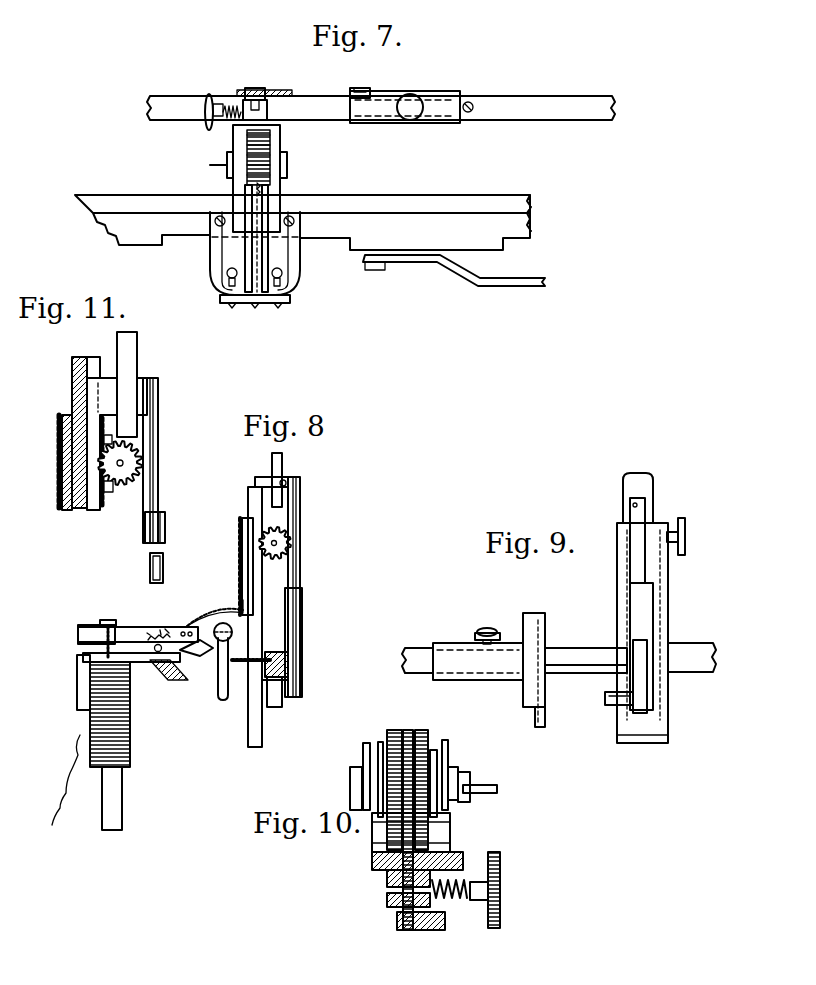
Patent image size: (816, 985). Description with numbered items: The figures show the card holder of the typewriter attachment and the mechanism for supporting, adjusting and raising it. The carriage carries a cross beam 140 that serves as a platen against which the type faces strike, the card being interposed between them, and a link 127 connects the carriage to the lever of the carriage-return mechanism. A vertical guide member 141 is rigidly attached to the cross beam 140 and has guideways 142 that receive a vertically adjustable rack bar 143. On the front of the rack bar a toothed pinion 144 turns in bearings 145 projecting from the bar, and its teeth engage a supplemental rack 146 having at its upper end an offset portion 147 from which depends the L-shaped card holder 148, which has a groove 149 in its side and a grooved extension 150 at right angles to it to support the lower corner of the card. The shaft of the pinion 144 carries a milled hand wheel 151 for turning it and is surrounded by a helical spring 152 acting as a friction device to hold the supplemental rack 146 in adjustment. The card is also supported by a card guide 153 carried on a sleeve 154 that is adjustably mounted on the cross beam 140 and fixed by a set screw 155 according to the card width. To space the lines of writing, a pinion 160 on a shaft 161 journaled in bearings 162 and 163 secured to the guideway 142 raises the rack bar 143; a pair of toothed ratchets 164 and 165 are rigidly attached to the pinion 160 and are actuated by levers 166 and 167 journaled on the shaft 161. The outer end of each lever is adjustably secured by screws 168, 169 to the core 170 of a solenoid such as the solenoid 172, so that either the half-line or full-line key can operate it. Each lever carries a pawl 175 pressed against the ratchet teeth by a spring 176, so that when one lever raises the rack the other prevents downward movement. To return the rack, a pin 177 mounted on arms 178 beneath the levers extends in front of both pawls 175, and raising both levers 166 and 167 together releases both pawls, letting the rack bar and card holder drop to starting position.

In FIG. 7, the link 127 is at (508, 286).
In FIG. 7, the cross beam 140 is at (548, 96).
In FIG. 8, the cross beam 140 is at (283, 707).
In FIG. 9, the cross beam 140 is at (572, 674).
In FIG. 8, the vertical guide member 141 is at (248, 727).
In FIG. 10, the vertical guide member 141 is at (460, 860).
In FIG. 10, the guideways 142 is at (385, 862).
In FIG. 11, the rack bar 143 is at (72, 372).
In FIG. 10, the rack bar 143 is at (395, 876).
In FIG. 11, the toothed pinion 144 is at (126, 498).
In FIG. 10, the toothed pinion 144 is at (400, 922).
In FIG. 10, the bearings 145 is at (400, 898).
In FIG. 11, the supplemental rack 146 is at (80, 408).
In FIG. 10, the supplemental rack 146 is at (430, 852).
In FIG. 11, the offset portion 147 is at (140, 378).
In FIG. 7, the card holder 148 is at (256, 88).
In FIG. 11, the card holder 148 is at (158, 420).
In FIG. 8, the card holder 148 is at (298, 546).
In FIG. 9, the card holder 148 is at (635, 558).
In FIG. 10, the card holder 148 is at (419, 931).
In FIG. 11, the groove 149 is at (155, 480).
In FIG. 8, the groove 149 is at (300, 571).
In FIG. 10, the groove 149 is at (400, 931).
In FIG. 7, the grooved extension 150 is at (281, 90).
In FIG. 11, the grooved extension 150 is at (163, 572).
In FIG. 9, the grooved extension 150 is at (608, 706).
In FIG. 7, the milled hand wheel 151 is at (207, 94).
In FIG. 9, the milled hand wheel 151 is at (686, 538).
In FIG. 10, the milled hand wheel 151 is at (500, 891).
In FIG. 10, the helical spring 152 is at (456, 886).
In FIG. 7, the card guide 153 is at (362, 88).
In FIG. 9, the card guide 153 is at (545, 636).
In FIG. 7, the sleeve 154 is at (433, 123).
In FIG. 9, the sleeve 154 is at (452, 645).
In FIG. 7, the set screw 155 is at (415, 98).
In FIG. 9, the set screw 155 is at (487, 627).
In FIG. 7, the pinion 160 is at (266, 162).
In FIG. 10, the pinion 160 is at (409, 735).
In FIG. 10, the shaft 161 is at (470, 787).
In FIG. 10, the bearing 162 is at (448, 820).
In FIG. 10, the bearing 163 is at (372, 835).
In FIG. 7, the ratchet 164 is at (233, 147).
In FIG. 10, the ratchet 164 is at (440, 729).
In FIG. 7, the ratchet 165 is at (271, 150).
In FIG. 10, the ratchet 165 is at (388, 738).
In FIG. 7, the lever 166 is at (281, 256).
In FIG. 8, the lever 166 is at (122, 627).
In FIG. 7, the lever 167 is at (250, 247).
In FIG. 7, the screw 168 is at (282, 288).
In FIG. 8, the screw 168 is at (105, 621).
In FIG. 7, the screw 169 is at (228, 281).
In FIG. 8, the core 170 is at (112, 832).
In FIG. 8, the solenoid 172 is at (130, 741).
In FIG. 8, the pawl 175 is at (216, 683).
In FIG. 8, the spring 176 is at (160, 630).
In FIG. 8, the pin 177 is at (201, 621).
In FIG. 8, the arms 178 is at (190, 632).